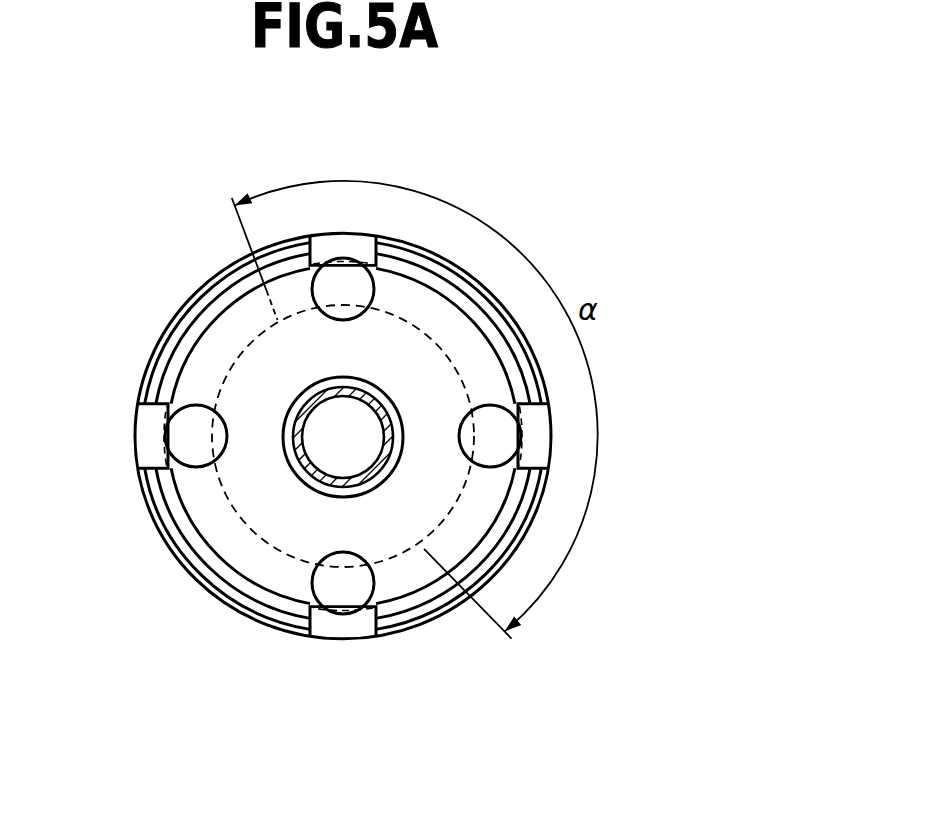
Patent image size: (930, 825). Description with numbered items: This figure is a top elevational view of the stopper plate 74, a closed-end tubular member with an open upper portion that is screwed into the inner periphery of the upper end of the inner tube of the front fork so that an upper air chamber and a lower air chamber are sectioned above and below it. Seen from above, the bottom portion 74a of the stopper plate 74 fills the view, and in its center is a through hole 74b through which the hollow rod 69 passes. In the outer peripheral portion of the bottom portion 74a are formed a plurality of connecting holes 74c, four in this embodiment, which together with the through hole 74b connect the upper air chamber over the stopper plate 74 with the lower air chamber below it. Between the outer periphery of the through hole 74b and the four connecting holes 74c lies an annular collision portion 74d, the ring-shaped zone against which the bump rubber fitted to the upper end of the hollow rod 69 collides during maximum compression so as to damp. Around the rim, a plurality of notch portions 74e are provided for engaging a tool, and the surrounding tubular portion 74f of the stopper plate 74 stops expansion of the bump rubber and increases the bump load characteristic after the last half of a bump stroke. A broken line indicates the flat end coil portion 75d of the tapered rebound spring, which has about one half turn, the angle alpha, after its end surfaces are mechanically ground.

The stopper plate 74 is at (448, 224).
The bottom portion 74a is at (253, 375).
The through hole 74b is at (348, 488).
The connecting holes 74c is at (495, 435).
The annular collision portion 74d is at (267, 510).
The notch portions 74e is at (145, 427).
The tubular portion 74f is at (247, 600).
The flat end coil portion 75d is at (440, 313).
The hollow rod 69 is at (388, 400).